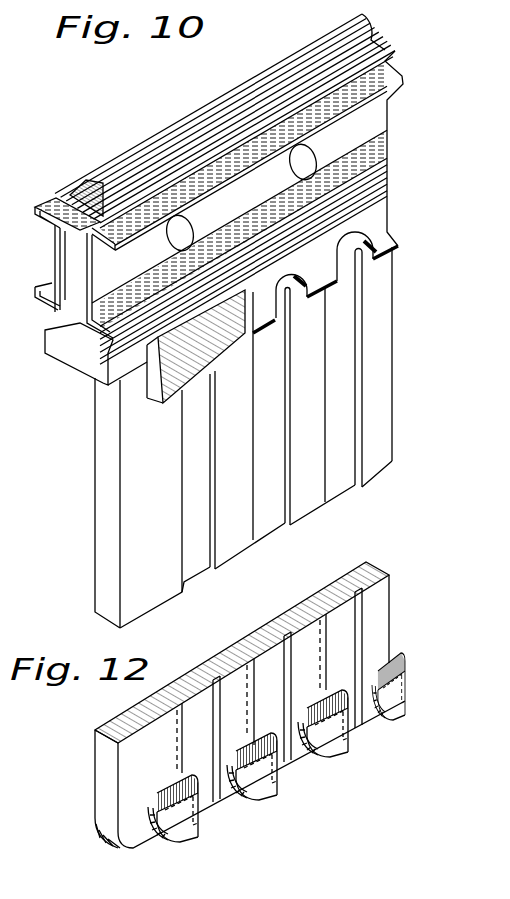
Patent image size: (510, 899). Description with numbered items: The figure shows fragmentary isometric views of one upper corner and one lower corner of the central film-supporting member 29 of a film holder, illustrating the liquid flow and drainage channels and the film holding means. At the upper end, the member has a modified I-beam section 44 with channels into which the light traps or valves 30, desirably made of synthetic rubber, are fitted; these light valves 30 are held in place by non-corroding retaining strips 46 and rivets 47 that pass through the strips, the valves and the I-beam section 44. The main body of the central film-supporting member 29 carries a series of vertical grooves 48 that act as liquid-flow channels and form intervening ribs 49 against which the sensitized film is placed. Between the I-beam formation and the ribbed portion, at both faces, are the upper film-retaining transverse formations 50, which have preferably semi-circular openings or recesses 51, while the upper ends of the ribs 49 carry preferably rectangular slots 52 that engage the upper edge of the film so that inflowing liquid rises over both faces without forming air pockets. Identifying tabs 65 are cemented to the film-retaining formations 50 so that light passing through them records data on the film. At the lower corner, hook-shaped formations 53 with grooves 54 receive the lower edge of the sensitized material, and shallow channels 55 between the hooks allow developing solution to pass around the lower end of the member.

In FIG. 10, the central film-supporting member 29 is at (125, 557).
In FIG. 12, the central film-supporting member 29 is at (118, 786).
In FIG. 10, the light trap or valve 30 is at (50, 200).
In FIG. 10, the modified I-beam section 44 is at (67, 260).
In FIG. 10, the retaining strip 46 is at (108, 297).
In FIG. 10, the rivet 47 is at (193, 227).
In FIG. 10, the groove 48 is at (187, 483).
In FIG. 12, the groove 48 is at (170, 691).
In FIG. 10, the rib 49 is at (228, 520).
In FIG. 12, the rib 49 is at (214, 668).
In FIG. 10, the upper film-retaining transverse formation 50 is at (390, 223).
In FIG. 10, the semi-circular opening or recess 51 is at (343, 258).
In FIG. 10, the rectangular slot 52 is at (377, 255).
In FIG. 12, the hook-shaped formation 53 is at (195, 836).
In FIG. 12, the groove 54 is at (158, 798).
In FIG. 12, the shallow channel 55 is at (233, 804).
In FIG. 10, the identifying tab 65 is at (163, 400).